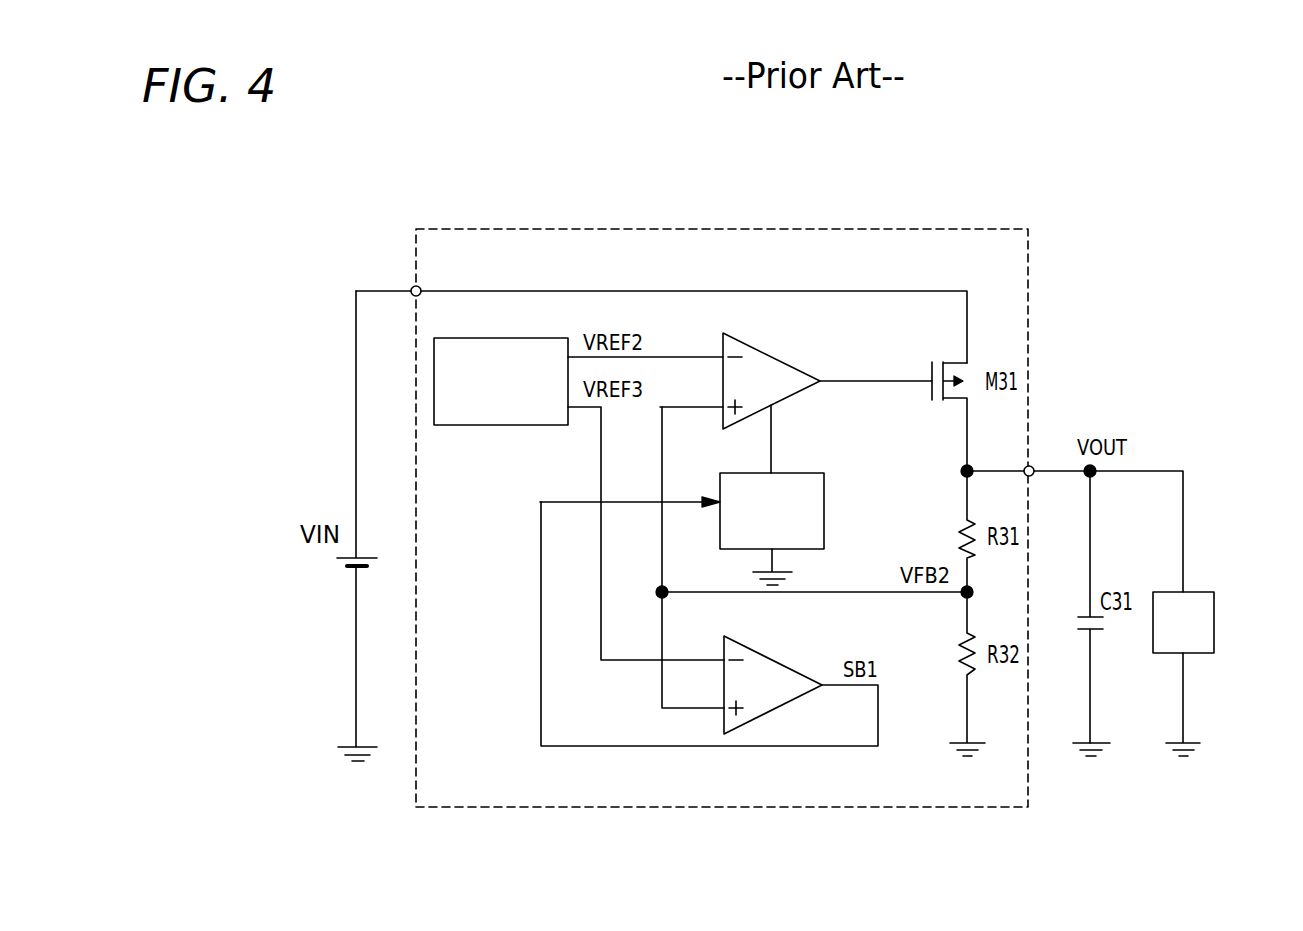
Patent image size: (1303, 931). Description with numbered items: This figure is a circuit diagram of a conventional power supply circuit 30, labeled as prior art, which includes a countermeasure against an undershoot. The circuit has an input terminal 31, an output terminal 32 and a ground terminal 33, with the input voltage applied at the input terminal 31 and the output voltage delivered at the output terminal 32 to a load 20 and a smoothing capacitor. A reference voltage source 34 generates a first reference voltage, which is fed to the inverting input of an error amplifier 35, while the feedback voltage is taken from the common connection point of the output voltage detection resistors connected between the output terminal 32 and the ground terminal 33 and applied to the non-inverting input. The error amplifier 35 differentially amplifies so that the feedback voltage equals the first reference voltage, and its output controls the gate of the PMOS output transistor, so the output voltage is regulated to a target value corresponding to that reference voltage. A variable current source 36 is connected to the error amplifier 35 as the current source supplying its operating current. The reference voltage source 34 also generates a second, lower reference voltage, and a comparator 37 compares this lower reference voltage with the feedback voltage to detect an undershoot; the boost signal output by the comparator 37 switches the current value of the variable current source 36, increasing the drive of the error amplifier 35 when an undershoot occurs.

The power supply circuit 30 is at (749, 229).
The input terminal 31 is at (412, 287).
The output terminal 32 is at (1034, 474).
The ground terminal 33 is at (1115, 752).
The reference voltage source 34 is at (512, 425).
The error amplifier 35 is at (762, 349).
The variable current source 36 is at (802, 473).
The comparator 37 is at (768, 656).
The load 20 is at (1200, 591).